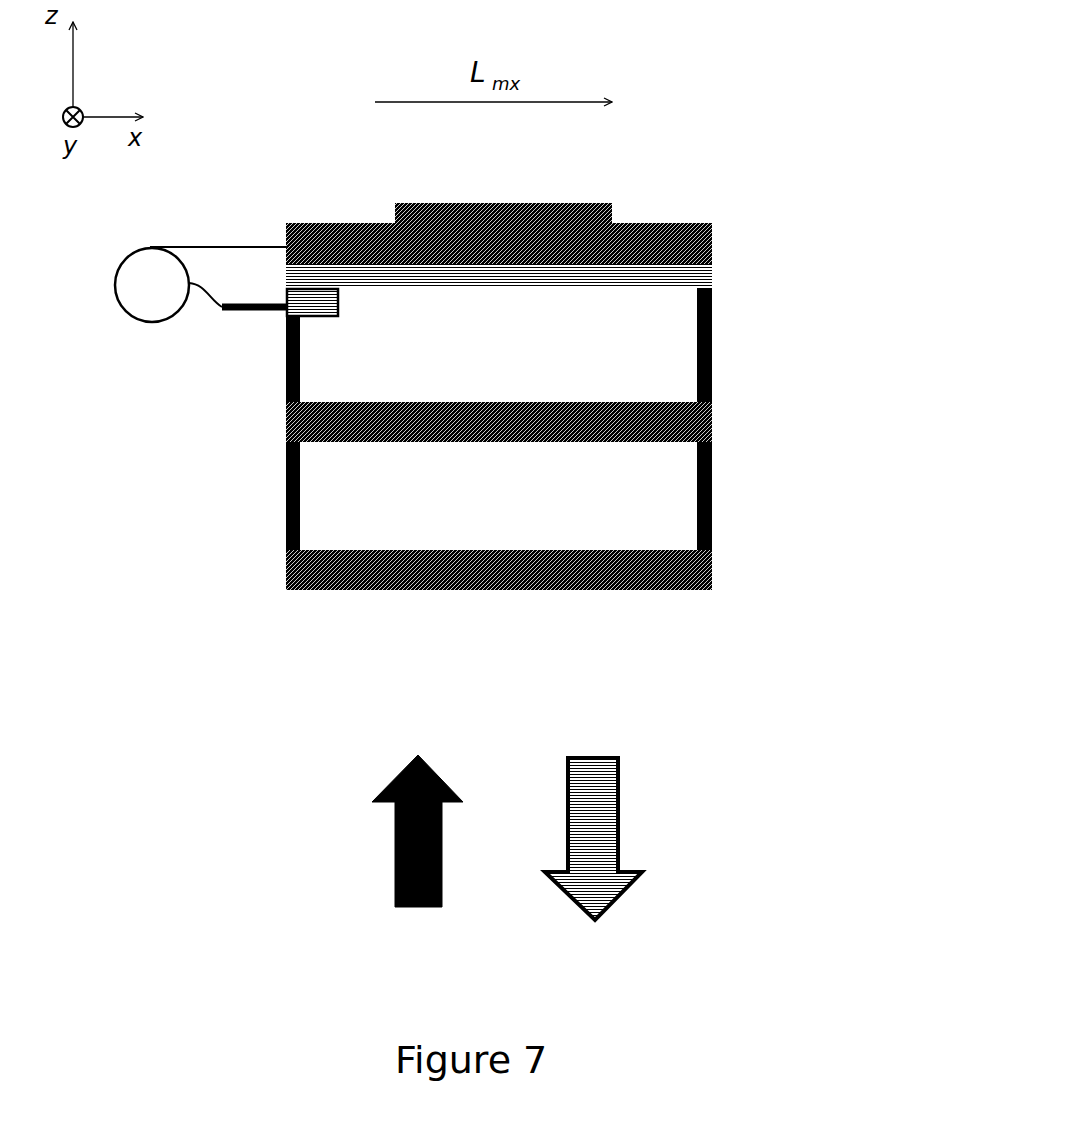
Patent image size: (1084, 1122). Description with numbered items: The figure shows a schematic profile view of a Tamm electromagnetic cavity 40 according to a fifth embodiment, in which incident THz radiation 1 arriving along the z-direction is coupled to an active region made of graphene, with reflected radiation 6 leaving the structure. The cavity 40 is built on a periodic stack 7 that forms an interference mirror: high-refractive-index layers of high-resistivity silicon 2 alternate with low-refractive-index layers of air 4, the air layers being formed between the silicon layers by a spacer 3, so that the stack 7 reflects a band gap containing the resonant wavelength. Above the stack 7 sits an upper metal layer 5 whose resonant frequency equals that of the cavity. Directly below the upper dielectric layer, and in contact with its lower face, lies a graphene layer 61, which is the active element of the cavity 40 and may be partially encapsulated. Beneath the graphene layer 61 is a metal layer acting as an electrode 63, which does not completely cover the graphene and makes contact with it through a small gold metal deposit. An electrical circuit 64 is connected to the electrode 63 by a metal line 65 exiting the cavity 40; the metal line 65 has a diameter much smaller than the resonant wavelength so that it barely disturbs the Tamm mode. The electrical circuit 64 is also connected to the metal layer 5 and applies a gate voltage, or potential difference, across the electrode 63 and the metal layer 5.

The incident THz radiation 1 is at (395, 830).
The high-resistivity silicon layer 2 is at (286, 572).
The spacer 3 is at (286, 475).
The air layer 4 is at (673, 365).
The metal layer 5 is at (612, 206).
The reflected radiation 6 is at (618, 862).
The periodic stack 7 is at (842, 225).
The Tamm electromagnetic cavity 40 is at (168, 548).
The graphene layer 61 is at (712, 273).
The electrode 63 is at (306, 318).
The electrical circuit 64 is at (143, 316).
The metal line 65 is at (222, 307).